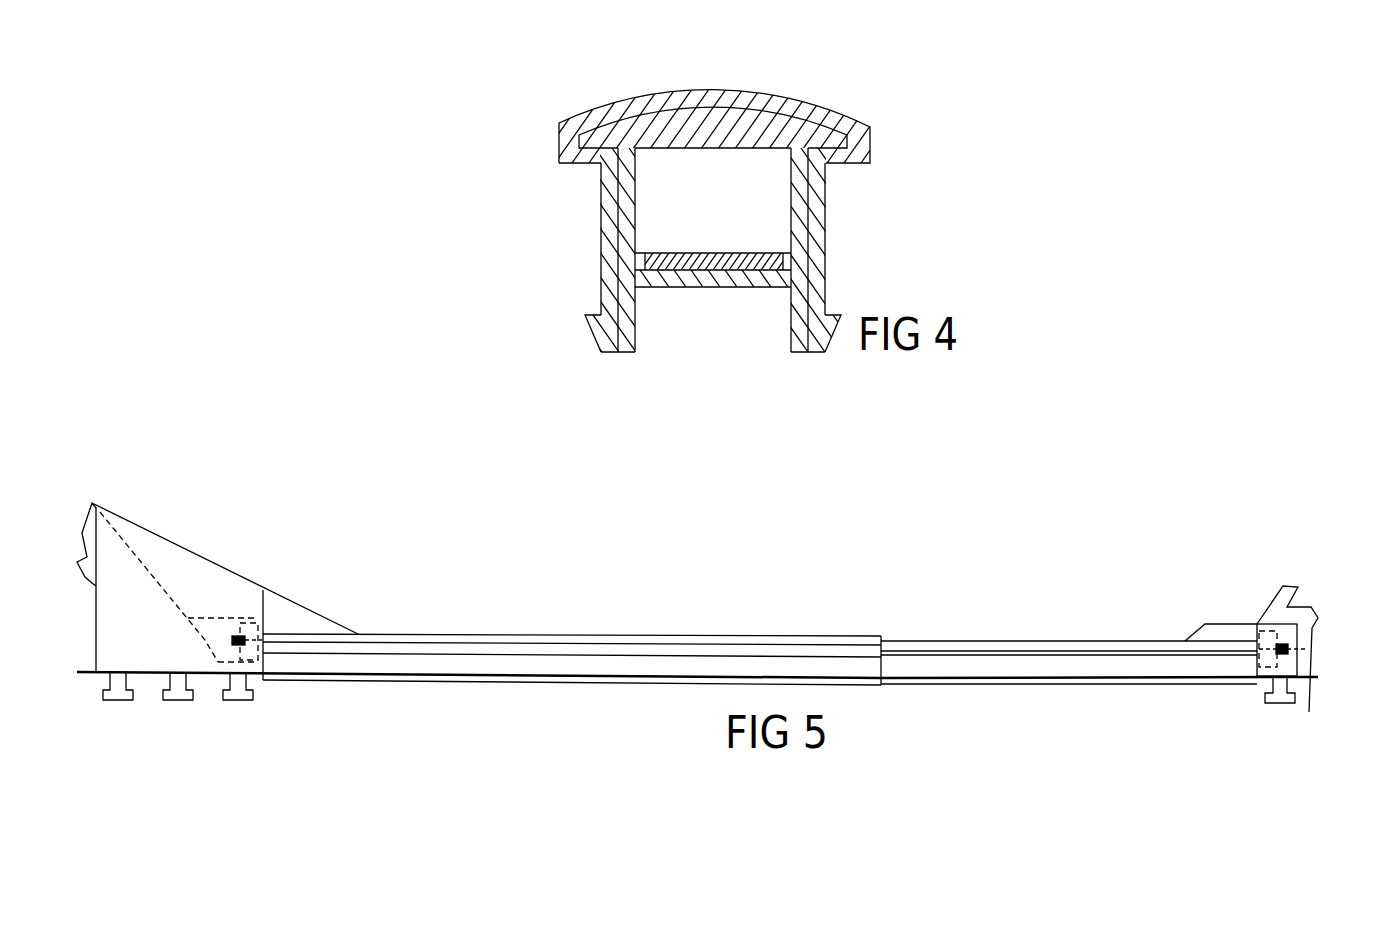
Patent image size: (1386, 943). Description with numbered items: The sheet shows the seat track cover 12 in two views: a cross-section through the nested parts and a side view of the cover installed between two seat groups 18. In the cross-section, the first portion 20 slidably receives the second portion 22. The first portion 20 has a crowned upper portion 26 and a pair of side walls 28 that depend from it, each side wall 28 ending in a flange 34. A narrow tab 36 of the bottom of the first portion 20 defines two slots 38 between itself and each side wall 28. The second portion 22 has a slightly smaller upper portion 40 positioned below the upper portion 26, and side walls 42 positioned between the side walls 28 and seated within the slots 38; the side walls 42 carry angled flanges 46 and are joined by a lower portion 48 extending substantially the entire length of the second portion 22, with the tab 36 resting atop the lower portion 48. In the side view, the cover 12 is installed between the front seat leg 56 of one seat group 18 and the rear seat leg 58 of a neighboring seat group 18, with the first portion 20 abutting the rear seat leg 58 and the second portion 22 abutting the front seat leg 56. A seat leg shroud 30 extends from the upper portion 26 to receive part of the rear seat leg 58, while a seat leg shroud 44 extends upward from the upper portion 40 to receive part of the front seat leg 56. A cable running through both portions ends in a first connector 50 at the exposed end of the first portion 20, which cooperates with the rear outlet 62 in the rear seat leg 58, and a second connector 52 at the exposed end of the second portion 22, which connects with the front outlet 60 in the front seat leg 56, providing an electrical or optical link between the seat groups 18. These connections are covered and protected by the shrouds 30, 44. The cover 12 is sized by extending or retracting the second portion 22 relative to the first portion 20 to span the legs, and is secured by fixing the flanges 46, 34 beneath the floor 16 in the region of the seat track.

In FIG. 4, the seat track cover 12 is at (536, 90).
In FIG. 5, the seat track cover 12 is at (754, 610).
In FIG. 5, the aircraft passenger cabin floor 16 is at (143, 675).
In FIG. 5, the passenger seat groups 18 is at (133, 452).
In FIG. 4, the first portion 20 is at (868, 105).
In FIG. 5, the first portion 20 is at (520, 633).
In FIG. 4, the second portion 22 is at (725, 152).
In FIG. 5, the second portion 22 is at (1000, 641).
In FIG. 4, the upper portion 26 is at (745, 97).
In FIG. 4, the side walls 28 is at (601, 255).
In FIG. 5, the seat leg shroud 30 is at (318, 627).
In FIG. 4, the flange 34 is at (605, 338).
In FIG. 4, the tab 36 is at (717, 253).
In FIG. 4, the slots 38 is at (640, 300).
In FIG. 4, the upper portion 40 is at (668, 150).
In FIG. 4, the side walls 42 is at (637, 227).
In FIG. 5, the seat leg shroud 44 is at (1195, 636).
In FIG. 4, the flange 46 is at (622, 353).
In FIG. 4, the lower portion 48 is at (753, 278).
In FIG. 5, the first connector 50 is at (252, 623).
In FIG. 5, the second connector 52 is at (1257, 624).
In FIG. 5, the front seat leg 56 is at (1283, 588).
In FIG. 5, the rear seat leg 58 is at (98, 510).
In FIG. 5, the front outlet 60 is at (1290, 650).
In FIG. 5, the rear outlet 62 is at (214, 643).